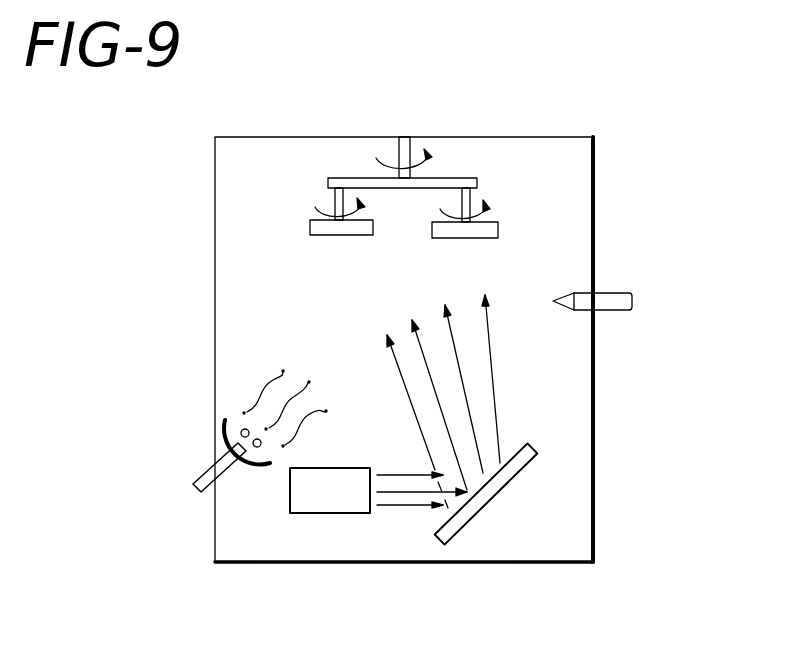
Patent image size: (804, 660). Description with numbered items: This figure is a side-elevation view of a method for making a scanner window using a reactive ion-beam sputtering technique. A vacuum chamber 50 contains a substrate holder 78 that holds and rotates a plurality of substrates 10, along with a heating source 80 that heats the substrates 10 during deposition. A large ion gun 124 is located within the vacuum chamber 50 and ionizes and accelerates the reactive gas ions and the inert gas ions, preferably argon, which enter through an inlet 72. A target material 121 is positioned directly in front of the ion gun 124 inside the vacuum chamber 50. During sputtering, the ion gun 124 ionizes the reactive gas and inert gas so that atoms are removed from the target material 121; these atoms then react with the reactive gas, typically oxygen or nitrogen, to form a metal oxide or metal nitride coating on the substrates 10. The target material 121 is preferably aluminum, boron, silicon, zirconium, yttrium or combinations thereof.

The vacuum chamber 50 is at (532, 138).
The substrate holder 78 is at (406, 140).
The substrates 10 is at (340, 233).
The inlet 72 is at (636, 301).
The target material 121 is at (507, 478).
The ion gun 124 is at (357, 500).
The heating source 80 is at (228, 422).